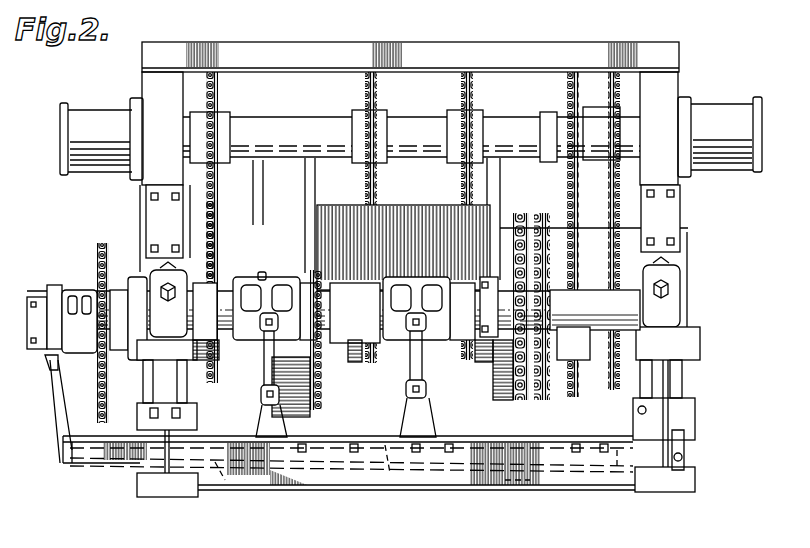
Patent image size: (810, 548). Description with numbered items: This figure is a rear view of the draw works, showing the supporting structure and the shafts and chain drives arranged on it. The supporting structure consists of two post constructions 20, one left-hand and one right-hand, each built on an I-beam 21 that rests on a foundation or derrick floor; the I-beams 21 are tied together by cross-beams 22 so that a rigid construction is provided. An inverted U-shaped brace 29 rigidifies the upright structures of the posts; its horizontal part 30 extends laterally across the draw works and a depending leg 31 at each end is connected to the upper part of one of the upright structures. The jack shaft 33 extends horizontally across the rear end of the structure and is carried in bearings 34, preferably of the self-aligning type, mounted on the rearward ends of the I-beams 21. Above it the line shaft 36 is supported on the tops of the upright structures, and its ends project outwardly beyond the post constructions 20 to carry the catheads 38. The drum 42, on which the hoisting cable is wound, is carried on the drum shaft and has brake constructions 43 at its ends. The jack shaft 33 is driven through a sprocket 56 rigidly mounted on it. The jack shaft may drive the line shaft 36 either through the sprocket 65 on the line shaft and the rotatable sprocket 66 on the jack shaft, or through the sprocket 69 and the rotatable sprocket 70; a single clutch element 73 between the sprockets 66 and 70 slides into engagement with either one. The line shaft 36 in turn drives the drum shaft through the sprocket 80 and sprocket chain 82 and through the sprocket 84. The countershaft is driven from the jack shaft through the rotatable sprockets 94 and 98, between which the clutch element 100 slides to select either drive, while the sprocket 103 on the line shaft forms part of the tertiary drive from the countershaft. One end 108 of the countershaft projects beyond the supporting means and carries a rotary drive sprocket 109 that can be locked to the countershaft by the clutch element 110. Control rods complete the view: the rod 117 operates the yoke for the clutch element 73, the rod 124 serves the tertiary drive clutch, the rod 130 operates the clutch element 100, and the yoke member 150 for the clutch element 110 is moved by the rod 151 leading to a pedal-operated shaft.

The post construction 20 is at (147, 215).
The I-beam 21 is at (163, 462).
The cross-beam 22 is at (321, 478).
The inverted U-shaped brace 29 is at (182, 43).
The horizontal part 30 is at (403, 44).
The depending leg 31 is at (155, 95).
The jack shaft 33 is at (640, 312).
The bearing 34 is at (672, 294).
The line shaft 36 is at (293, 128).
The cathead 38 is at (78, 122).
The drum 42 is at (430, 220).
The brake construction 43 is at (292, 246).
The sprocket 56 is at (533, 388).
The sprocket 65 is at (383, 122).
The sprocket 66 is at (355, 353).
The sprocket 69 is at (475, 128).
The sprocket 70 is at (483, 353).
The clutch element 73 is at (426, 348).
The sprocket 80 is at (220, 123).
The sprocket chain 82 is at (218, 265).
The sprocket 84 is at (553, 118).
The sprocket 94 is at (213, 360).
The sprocket 98 is at (347, 353).
The clutch element 100 is at (254, 353).
The sprocket 103 is at (600, 110).
The end of countershaft 108 is at (50, 362).
The rotary drive sprocket 109 is at (87, 298).
The clutch element 110 is at (67, 296).
The rod 117 is at (513, 493).
The rod 124 is at (617, 453).
The rod 130 is at (390, 473).
The yoke member 150 is at (58, 383).
The rod 151 is at (225, 480).